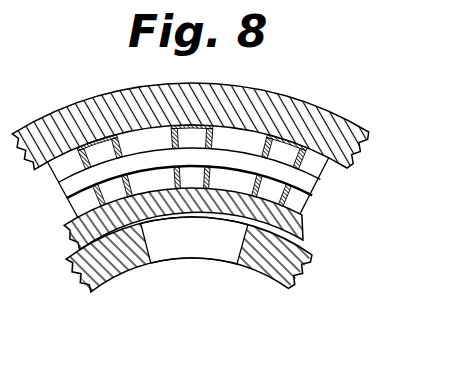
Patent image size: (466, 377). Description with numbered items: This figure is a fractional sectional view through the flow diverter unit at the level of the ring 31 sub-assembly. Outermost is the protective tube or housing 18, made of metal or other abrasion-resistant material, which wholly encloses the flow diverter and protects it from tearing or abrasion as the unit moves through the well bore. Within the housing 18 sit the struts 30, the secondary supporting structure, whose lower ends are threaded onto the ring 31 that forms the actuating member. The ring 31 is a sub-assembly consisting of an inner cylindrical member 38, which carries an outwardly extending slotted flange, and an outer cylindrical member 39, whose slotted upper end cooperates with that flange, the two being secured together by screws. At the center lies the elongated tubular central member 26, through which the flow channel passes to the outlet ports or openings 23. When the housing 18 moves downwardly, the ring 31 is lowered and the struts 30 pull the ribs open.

The housing 18 is at (315, 124).
The struts 30 is at (105, 137).
The ring 31 is at (53, 192).
The outer cylindrical member 39 is at (318, 168).
The inner cylindrical member 38 is at (302, 225).
The outlet ports 23 is at (162, 245).
The elongated tubular central member 26 is at (271, 278).